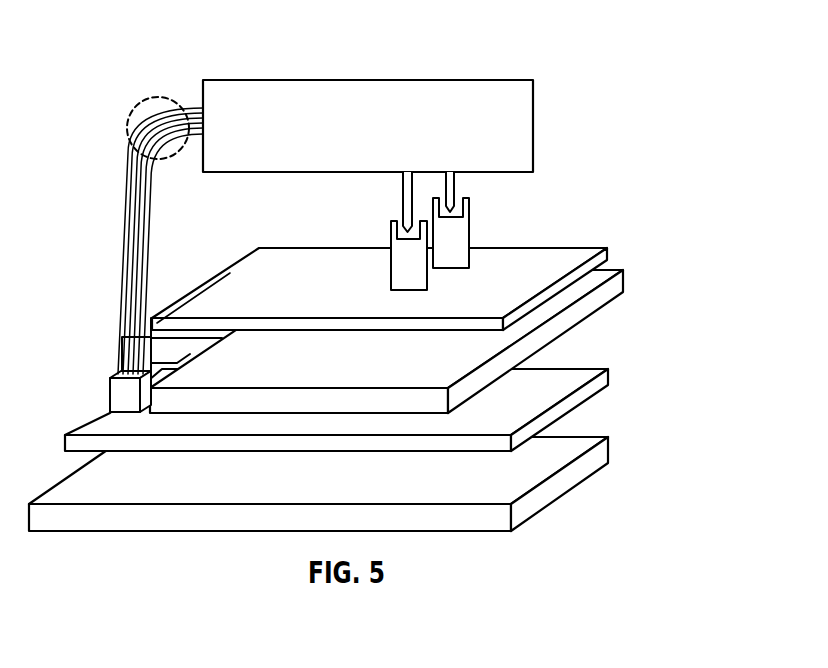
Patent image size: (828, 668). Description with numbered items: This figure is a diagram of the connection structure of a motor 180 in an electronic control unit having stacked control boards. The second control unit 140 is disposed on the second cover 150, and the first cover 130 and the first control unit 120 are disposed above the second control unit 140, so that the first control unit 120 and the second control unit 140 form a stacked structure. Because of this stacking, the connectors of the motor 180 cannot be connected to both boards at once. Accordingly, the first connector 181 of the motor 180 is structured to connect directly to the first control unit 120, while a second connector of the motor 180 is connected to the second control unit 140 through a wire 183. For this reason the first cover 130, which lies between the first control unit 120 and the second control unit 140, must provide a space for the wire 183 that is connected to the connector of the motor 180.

The first control unit 120 is at (608, 256).
The first cover 130 is at (623, 284).
The second control unit 140 is at (608, 378).
The second cover 150 is at (607, 457).
The motor 180 is at (338, 80).
The first connector 181 is at (456, 186).
The wire 183 is at (148, 98).